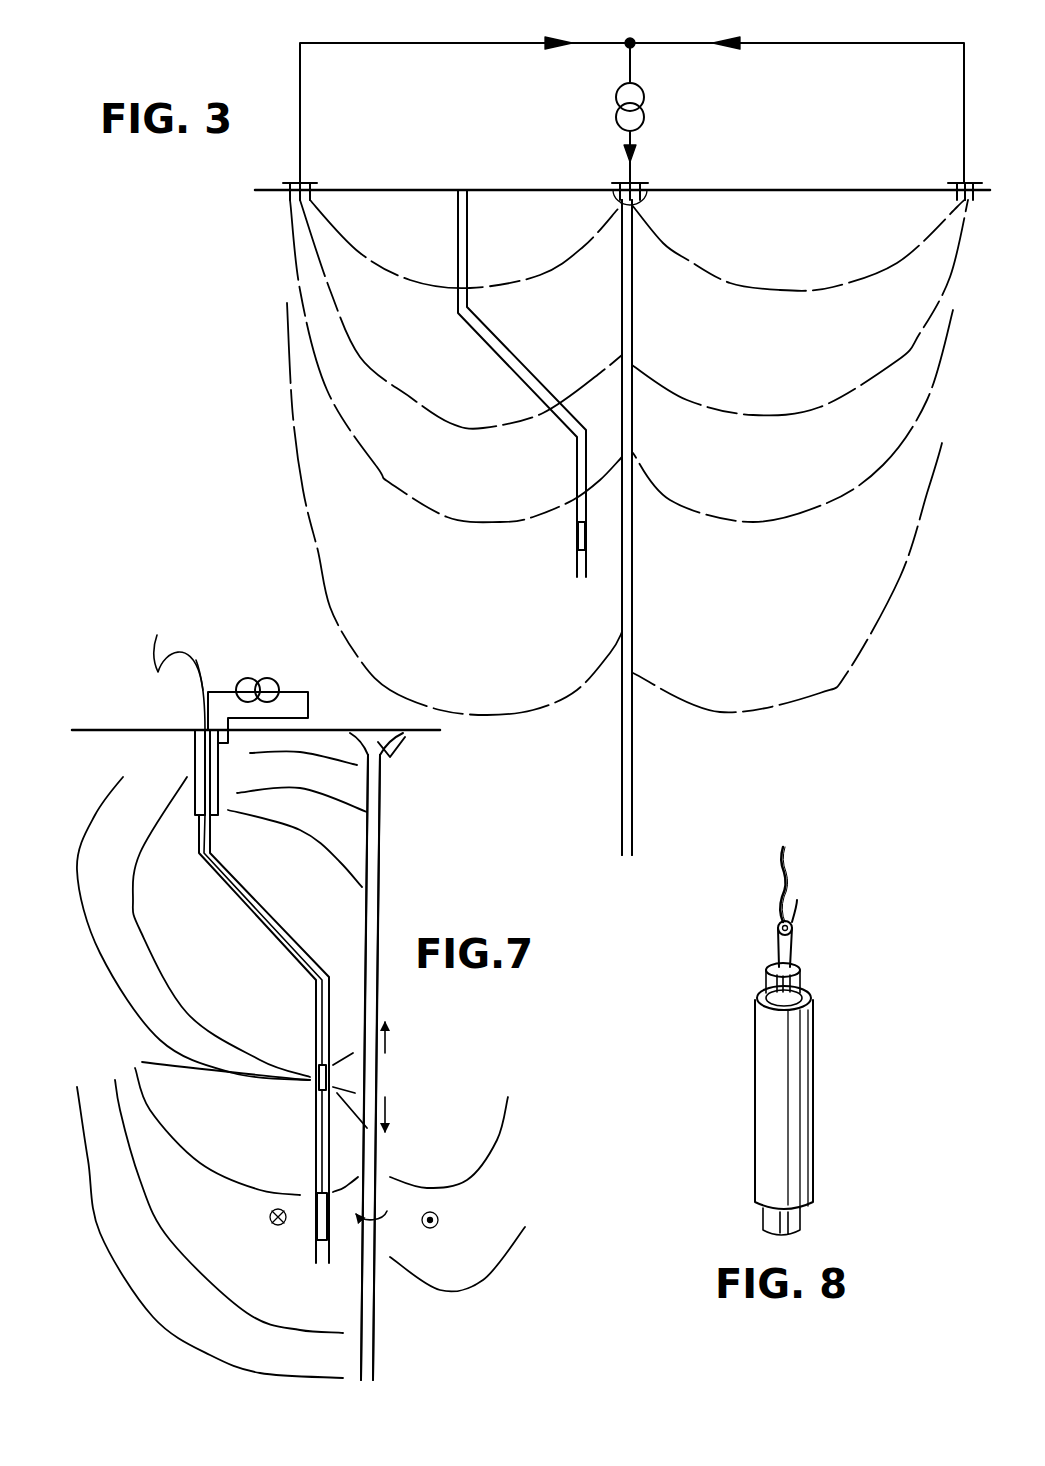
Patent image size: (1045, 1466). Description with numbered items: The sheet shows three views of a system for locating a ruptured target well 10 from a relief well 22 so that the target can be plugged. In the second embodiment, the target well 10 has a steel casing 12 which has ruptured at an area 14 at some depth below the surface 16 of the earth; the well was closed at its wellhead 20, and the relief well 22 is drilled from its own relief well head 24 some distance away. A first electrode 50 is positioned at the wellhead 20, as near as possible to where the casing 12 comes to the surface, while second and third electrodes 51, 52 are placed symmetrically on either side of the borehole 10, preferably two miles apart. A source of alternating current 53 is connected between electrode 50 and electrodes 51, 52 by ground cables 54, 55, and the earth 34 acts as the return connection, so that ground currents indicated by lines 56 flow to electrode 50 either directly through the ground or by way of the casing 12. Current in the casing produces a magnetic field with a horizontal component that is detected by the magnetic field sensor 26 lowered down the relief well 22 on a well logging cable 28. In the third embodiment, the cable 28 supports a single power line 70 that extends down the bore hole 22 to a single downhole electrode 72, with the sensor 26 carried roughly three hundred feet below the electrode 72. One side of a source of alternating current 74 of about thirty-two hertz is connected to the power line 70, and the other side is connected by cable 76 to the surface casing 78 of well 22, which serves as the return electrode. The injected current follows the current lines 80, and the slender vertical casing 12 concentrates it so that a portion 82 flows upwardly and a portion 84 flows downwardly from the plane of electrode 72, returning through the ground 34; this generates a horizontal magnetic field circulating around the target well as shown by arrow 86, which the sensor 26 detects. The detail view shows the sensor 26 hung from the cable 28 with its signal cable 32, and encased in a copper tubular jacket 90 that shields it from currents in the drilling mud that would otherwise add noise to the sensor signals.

In FIG. 3, the target well 10 is at (645, 289).
In FIG. 7, the target well 10 is at (392, 820).
In FIG. 3, the steel casing 12 is at (634, 314).
In FIG. 7, the steel casing 12 is at (378, 840).
In FIG. 3, the rupture area 14 is at (620, 776).
In FIG. 7, the rupture area 14 is at (377, 1307).
In FIG. 3, the surface of the earth 16 is at (372, 188).
In FIG. 7, the surface of the earth 16 is at (92, 728).
In FIG. 7, the wellhead 20 is at (393, 757).
In FIG. 3, the relief well 22 is at (468, 240).
In FIG. 7, the relief well 22 is at (268, 938).
In FIG. 7, the relief well head 24 is at (195, 724).
In FIG. 3, the magnetic field sensor 26 is at (577, 535).
In FIG. 7, the magnetic field sensor 26 is at (318, 1233).
In FIG. 8, the magnetic field sensor 26 is at (818, 1105).
In FIG. 7, the well logging cable 28 is at (203, 693).
In FIG. 8, the well logging cable 28 is at (777, 920).
In FIG. 8, the signal cable 32 is at (800, 938).
In FIG. 3, the earth 34 is at (580, 327).
In FIG. 7, the earth 34 is at (220, 1120).
In FIG. 3, the first electrode 50 is at (618, 181).
In FIG. 3, the second electrode 51 is at (290, 181).
In FIG. 3, the third electrode 52 is at (955, 181).
In FIG. 3, the source of alternating current 53 is at (613, 92).
In FIG. 3, the ground cable 54 is at (415, 25).
In FIG. 3, the ground cable 55 is at (870, 43).
In FIG. 3, the ground current lines 56 is at (410, 285).
In FIG. 7, the power line 70 is at (203, 683).
In FIG. 7, the electrode 72 is at (318, 1072).
In FIG. 7, the source of alternating current 74 is at (252, 678).
In FIG. 7, the cable 76 is at (308, 707).
In FIG. 7, the surface casing 78 is at (217, 773).
In FIG. 7, the current lines 80 is at (133, 897).
In FIG. 7, the upward current portion 82 is at (388, 1040).
In FIG. 7, the downward current portion 84 is at (388, 1107).
In FIG. 7, the magnetic field arrow 86 is at (380, 1223).
In FIG. 8, the copper tubular jacket 90 is at (758, 1002).